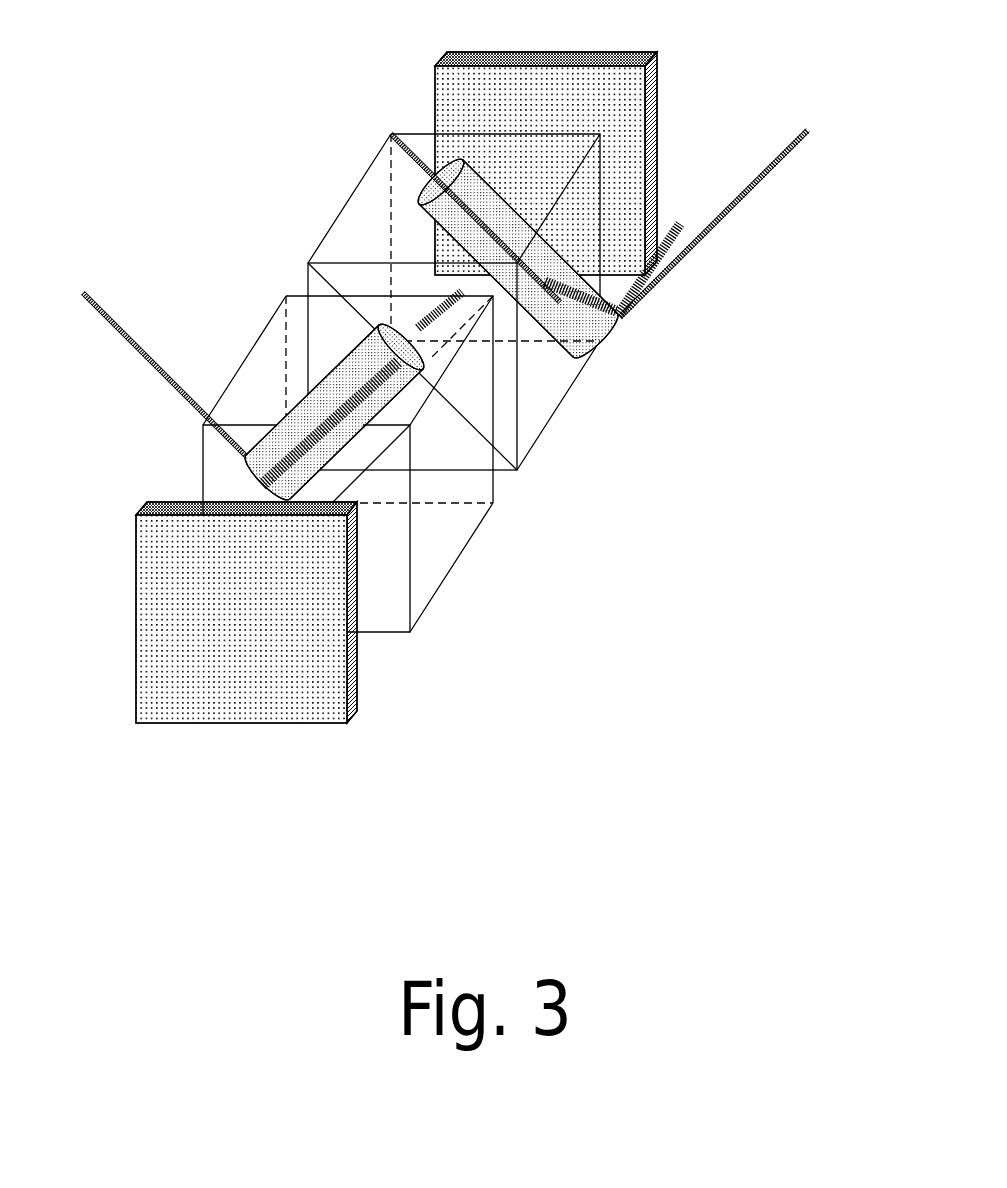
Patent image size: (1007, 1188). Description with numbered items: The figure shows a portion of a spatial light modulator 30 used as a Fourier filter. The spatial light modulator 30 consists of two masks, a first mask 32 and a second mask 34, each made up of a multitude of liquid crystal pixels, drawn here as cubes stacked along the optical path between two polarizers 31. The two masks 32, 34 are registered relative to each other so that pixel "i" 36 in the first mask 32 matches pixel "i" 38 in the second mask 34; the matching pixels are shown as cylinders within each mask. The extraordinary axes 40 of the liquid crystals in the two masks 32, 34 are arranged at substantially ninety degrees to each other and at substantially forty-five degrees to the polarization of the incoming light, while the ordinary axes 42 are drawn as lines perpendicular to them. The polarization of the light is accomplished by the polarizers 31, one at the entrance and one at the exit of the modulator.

The spatial light modulator 30 is at (452, 388).
The polarizer 31 is at (325, 685).
The first mask 32 is at (397, 476).
The second mask 34 is at (508, 308).
The pixel "i" in the first mask 36 is at (478, 560).
The pixel "i" in the second mask 38 is at (592, 393).
The extraordinary axis 40 is at (436, 322).
The ordinary axis 42 is at (135, 352).